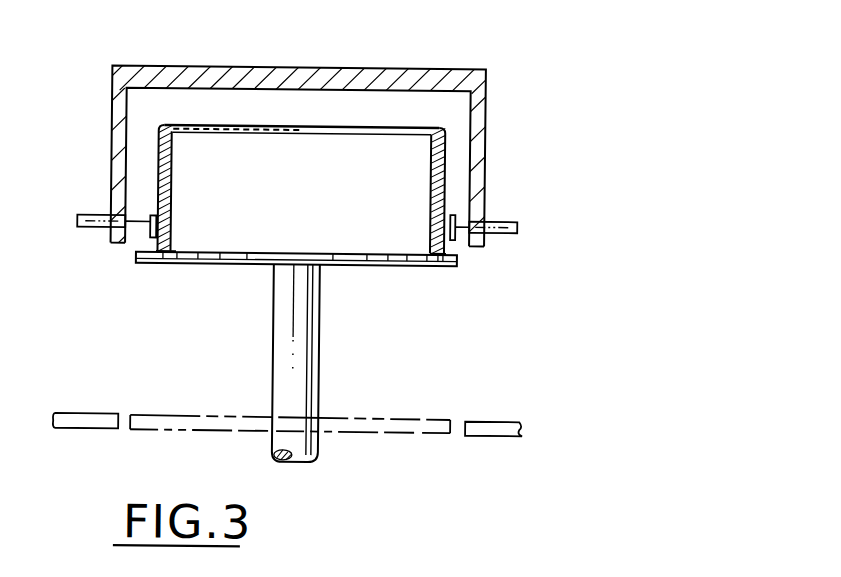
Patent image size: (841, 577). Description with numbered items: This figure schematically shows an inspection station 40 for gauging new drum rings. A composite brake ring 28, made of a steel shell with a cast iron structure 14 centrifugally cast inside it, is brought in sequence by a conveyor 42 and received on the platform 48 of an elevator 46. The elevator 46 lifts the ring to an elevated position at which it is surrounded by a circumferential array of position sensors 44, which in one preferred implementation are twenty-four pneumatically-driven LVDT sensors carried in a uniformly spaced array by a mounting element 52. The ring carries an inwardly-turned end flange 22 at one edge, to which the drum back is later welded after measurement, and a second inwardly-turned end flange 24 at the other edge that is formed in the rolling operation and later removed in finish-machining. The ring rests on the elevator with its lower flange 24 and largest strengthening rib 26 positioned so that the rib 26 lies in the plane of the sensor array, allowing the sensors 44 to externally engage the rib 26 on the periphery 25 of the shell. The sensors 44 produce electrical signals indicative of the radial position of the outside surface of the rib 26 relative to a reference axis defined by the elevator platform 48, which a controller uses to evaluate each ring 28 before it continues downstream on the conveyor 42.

The cast iron structure 14 is at (174, 225).
The inwardly-turned end flange 22 is at (173, 126).
The second inwardly-turned end flange 24 is at (176, 251).
The periphery 25 is at (156, 155).
The strengthening rib 26 is at (440, 224).
The composite brake ring 28 is at (444, 134).
The inspection station 40 is at (559, 147).
The conveyor 42 is at (489, 420).
The position sensors 44 is at (76, 217).
The elevator 46 is at (274, 305).
The platform 48 is at (412, 266).
The mounting element 52 is at (453, 70).